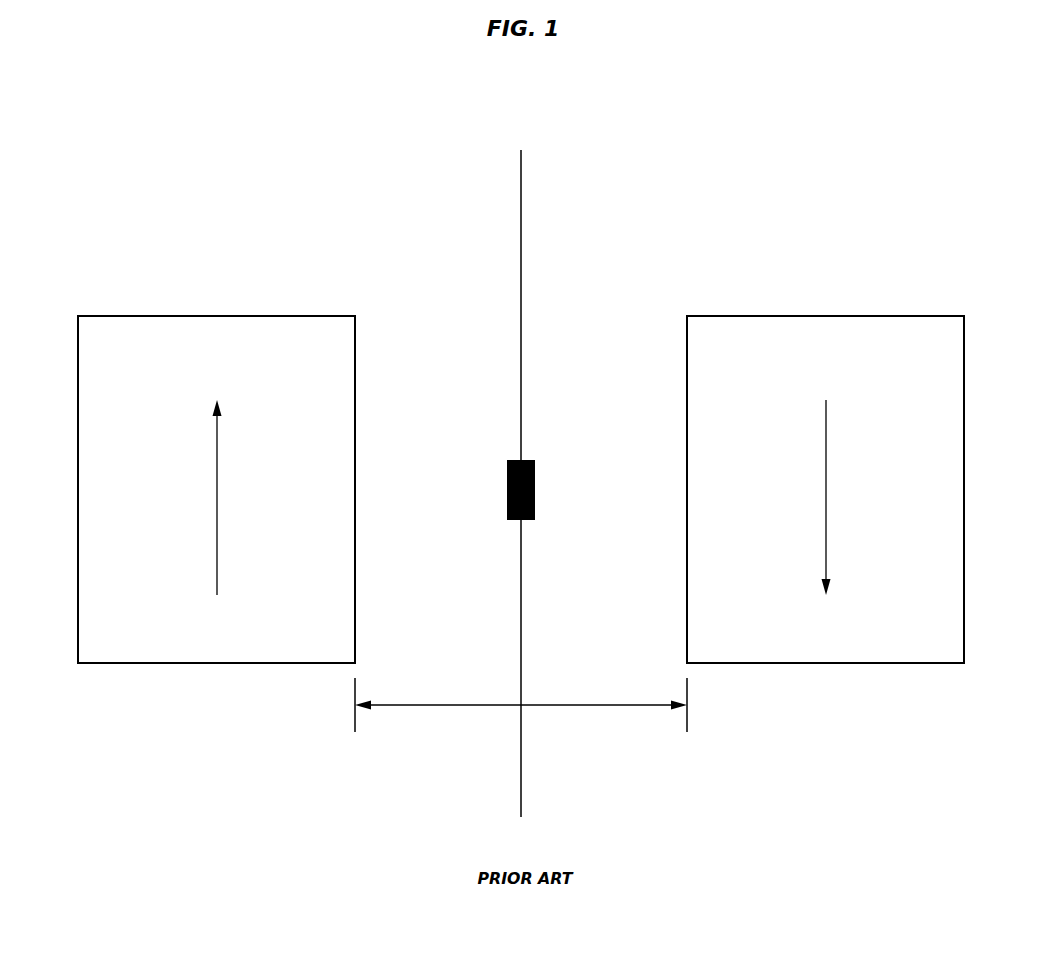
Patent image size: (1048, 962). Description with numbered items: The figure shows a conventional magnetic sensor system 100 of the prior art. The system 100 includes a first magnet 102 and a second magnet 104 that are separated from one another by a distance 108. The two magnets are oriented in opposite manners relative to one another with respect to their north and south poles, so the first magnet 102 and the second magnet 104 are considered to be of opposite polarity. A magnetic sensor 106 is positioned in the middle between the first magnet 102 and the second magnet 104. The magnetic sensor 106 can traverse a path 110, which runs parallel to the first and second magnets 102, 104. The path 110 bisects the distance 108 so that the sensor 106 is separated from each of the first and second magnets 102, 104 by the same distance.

The conventional magnetic sensor system 100 is at (188, 105).
The first magnet 102 is at (78, 398).
The second magnet 104 is at (964, 398).
The magnetic sensor 106 is at (535, 482).
The distance 108 is at (562, 705).
The path 110 is at (521, 247).